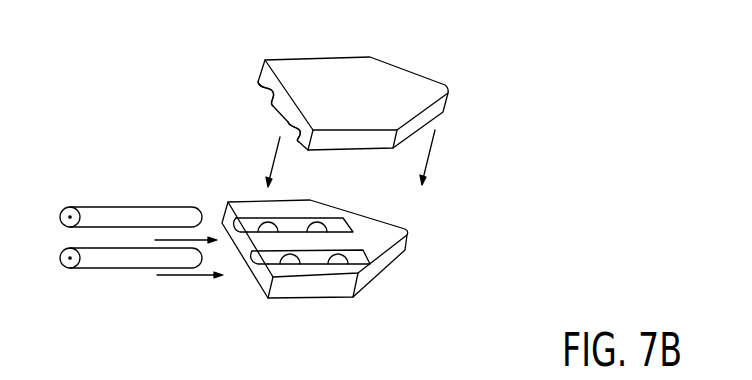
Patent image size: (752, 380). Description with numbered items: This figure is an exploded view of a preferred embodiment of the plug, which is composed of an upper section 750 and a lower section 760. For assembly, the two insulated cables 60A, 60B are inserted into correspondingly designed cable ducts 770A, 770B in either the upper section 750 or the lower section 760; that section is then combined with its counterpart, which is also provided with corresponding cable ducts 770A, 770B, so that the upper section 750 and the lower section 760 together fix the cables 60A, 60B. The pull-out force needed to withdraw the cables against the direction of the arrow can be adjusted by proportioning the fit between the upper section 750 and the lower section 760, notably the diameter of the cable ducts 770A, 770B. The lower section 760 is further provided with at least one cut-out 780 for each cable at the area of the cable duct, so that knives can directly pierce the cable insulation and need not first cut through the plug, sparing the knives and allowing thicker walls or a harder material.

The upper section 750 is at (428, 90).
The lower section 760 is at (382, 267).
The cable duct 770A is at (268, 98).
The cable duct 770B is at (287, 134).
The cut-out 780 is at (338, 258).
The cable 60A is at (117, 215).
The cable 60B is at (138, 260).